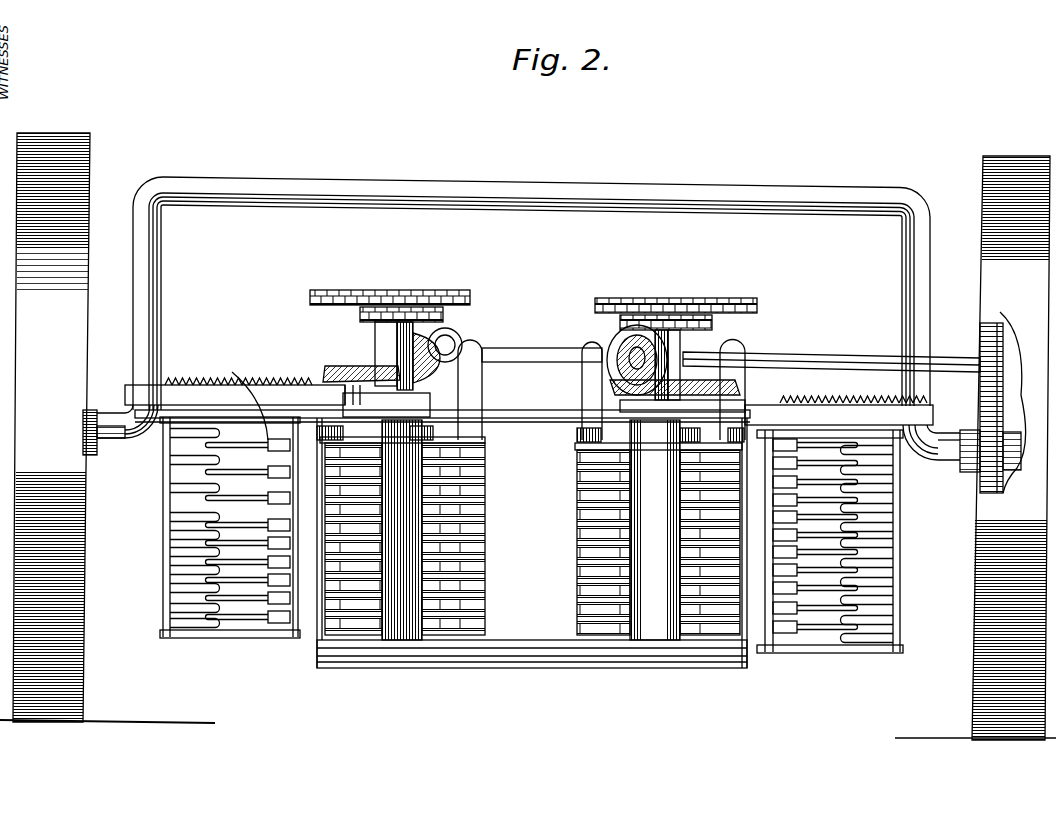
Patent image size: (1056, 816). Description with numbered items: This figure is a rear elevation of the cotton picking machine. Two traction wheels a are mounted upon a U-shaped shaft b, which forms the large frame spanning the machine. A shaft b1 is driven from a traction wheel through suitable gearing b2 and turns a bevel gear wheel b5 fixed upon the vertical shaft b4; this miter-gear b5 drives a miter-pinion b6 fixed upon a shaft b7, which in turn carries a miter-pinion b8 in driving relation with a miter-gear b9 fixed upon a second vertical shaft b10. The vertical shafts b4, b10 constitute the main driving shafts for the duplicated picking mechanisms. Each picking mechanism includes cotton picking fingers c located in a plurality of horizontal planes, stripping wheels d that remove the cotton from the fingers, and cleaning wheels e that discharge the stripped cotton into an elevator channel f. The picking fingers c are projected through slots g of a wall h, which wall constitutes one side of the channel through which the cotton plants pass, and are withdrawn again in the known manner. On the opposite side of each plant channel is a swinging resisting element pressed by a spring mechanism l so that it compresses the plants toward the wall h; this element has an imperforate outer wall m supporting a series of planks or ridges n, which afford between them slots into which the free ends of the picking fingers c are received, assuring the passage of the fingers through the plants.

The traction wheels a is at (66, 122).
The U-shaped shaft b is at (189, 178).
The shaft b1 is at (836, 372).
The gearing b2 is at (978, 350).
The shaft b4 is at (385, 348).
The bevel gear wheel b5 is at (506, 371).
The miter-pinion b6 is at (447, 328).
The shaft b7 is at (555, 355).
The miter-pinion b8 is at (615, 336).
The miter-gear b9 is at (839, 400).
The vertical shaft b10 is at (690, 355).
The slots g is at (855, 398).
The spring mechanism l is at (532, 391).
The cotton picking fingers c is at (240, 585).
The stripping wheels d is at (478, 504).
The cleaning wheels e is at (556, 513).
The elevator channel f is at (318, 622).
The wall h is at (283, 628).
The imperforate outer wall m is at (160, 557).
The planks or ridges n is at (175, 632).